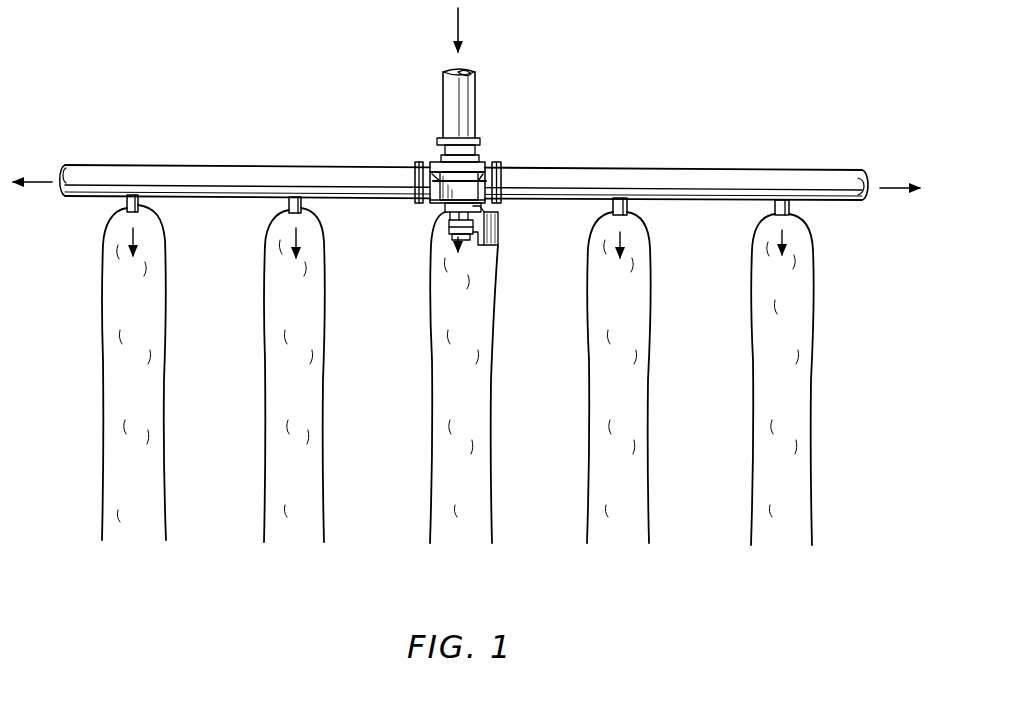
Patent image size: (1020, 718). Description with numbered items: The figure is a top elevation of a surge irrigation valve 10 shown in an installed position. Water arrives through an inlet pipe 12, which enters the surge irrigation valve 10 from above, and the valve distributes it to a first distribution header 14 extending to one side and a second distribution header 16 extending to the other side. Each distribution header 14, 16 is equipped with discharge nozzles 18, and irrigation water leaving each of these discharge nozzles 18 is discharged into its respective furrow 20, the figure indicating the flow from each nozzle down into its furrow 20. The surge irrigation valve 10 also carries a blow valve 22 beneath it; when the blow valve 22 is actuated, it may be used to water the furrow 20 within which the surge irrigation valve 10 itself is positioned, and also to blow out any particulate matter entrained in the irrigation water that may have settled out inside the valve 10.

The surge irrigation valve 10 is at (489, 156).
The inlet pipe 12 is at (443, 95).
The first distribution header 14 is at (229, 167).
The second distribution header 16 is at (738, 169).
The discharge nozzles 18 is at (126, 207).
The furrow 20 is at (110, 390).
The blow valve 22 is at (440, 212).